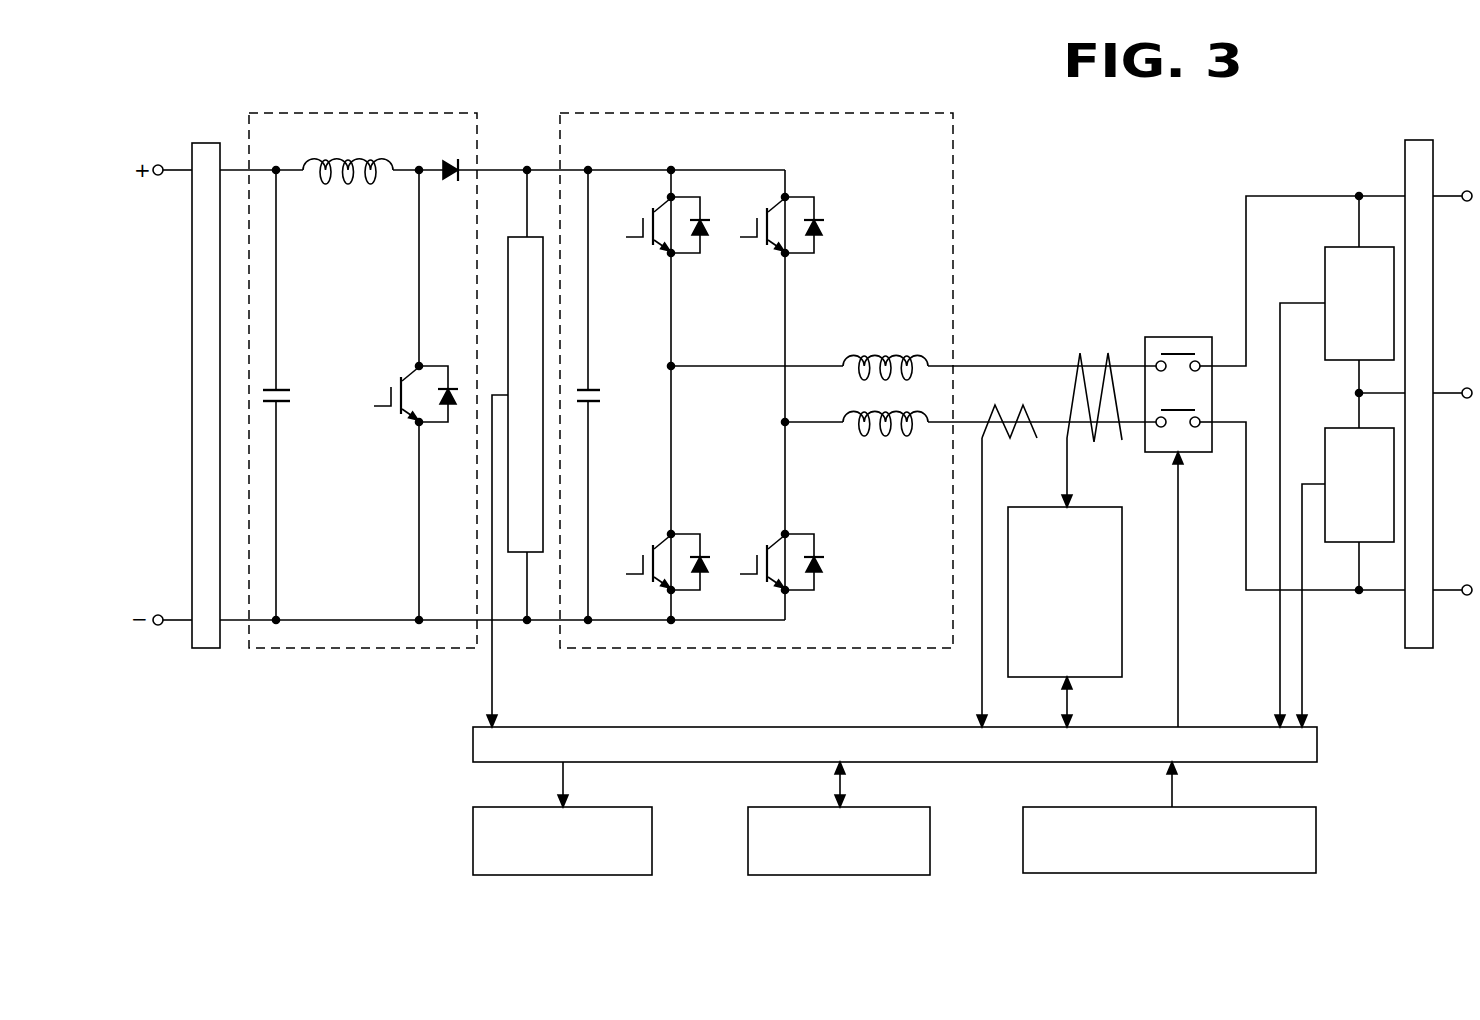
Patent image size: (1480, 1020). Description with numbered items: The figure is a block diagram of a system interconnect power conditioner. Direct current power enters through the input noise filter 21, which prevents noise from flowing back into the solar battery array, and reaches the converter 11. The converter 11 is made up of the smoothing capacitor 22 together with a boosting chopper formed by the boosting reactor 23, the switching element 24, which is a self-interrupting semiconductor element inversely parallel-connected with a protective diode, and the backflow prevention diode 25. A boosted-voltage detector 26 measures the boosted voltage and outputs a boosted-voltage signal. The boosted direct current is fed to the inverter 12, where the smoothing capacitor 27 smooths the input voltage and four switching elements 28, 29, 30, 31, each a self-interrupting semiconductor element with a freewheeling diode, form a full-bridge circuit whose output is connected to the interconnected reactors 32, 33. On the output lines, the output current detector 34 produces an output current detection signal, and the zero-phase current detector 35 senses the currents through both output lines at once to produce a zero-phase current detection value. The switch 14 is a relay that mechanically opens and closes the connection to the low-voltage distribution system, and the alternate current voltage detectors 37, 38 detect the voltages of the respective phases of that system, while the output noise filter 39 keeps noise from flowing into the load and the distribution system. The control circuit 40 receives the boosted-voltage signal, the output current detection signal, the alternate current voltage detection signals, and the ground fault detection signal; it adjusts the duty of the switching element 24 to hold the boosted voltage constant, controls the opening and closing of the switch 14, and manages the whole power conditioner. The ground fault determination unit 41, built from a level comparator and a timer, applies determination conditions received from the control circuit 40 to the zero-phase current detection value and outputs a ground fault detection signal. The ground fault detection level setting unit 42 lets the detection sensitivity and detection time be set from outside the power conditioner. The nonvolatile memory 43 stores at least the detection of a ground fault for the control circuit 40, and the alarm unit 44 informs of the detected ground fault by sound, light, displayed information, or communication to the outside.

The converter 11 is at (370, 113).
The inverter 12 is at (758, 113).
The switch 14 is at (1180, 337).
The input noise filter 21 is at (212, 143).
The smoothing capacitor 22 is at (289, 388).
The boosting reactor 23 is at (352, 184).
The switching element 24 is at (410, 380).
The backflow prevention diode 25 is at (445, 180).
The boosted-voltage detector 26 is at (520, 237).
The smoothing capacitor 27 is at (592, 388).
The switching element 28 is at (660, 210).
The switching element 29 is at (660, 546).
The switching element 30 is at (774, 210).
The switching element 31 is at (774, 546).
The interconnected reactor 32 is at (888, 348).
The interconnected reactor 33 is at (884, 436).
The output current detector 34 is at (1018, 430).
The zero-phase current detector 35 is at (1082, 356).
The alternate current voltage detector 37 is at (1340, 247).
The alternate current voltage detector 38 is at (1340, 428).
The output noise filter 39 is at (1422, 140).
The control circuit 40 is at (473, 745).
The ground fault determination unit 41 is at (1122, 525).
The ground fault detection level setting unit 42 is at (1023, 843).
The nonvolatile memory 43 is at (748, 843).
The alarm unit 44 is at (473, 843).